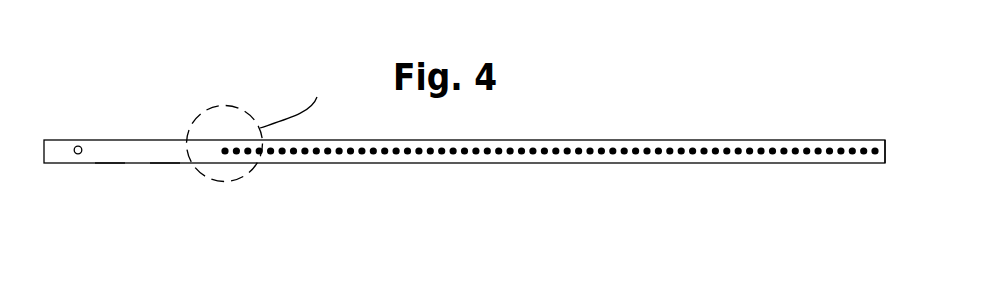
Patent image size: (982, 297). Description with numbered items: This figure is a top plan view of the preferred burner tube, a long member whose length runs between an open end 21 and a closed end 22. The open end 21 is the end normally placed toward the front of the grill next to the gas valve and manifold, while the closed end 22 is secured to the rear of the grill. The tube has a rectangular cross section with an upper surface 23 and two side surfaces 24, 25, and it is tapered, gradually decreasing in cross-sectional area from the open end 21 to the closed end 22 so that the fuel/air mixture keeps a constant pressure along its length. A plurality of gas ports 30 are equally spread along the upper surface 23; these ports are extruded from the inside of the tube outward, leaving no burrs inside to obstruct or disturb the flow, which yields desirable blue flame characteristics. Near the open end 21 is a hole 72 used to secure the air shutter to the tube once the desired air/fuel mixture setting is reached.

The open end 21 is at (44, 146).
The closed end 22 is at (886, 151).
The upper surface 23 is at (163, 163).
The side surface 24 is at (108, 163).
The side surface 25 is at (173, 137).
The gas ports 30 is at (552, 147).
The hole 72 is at (82, 147).